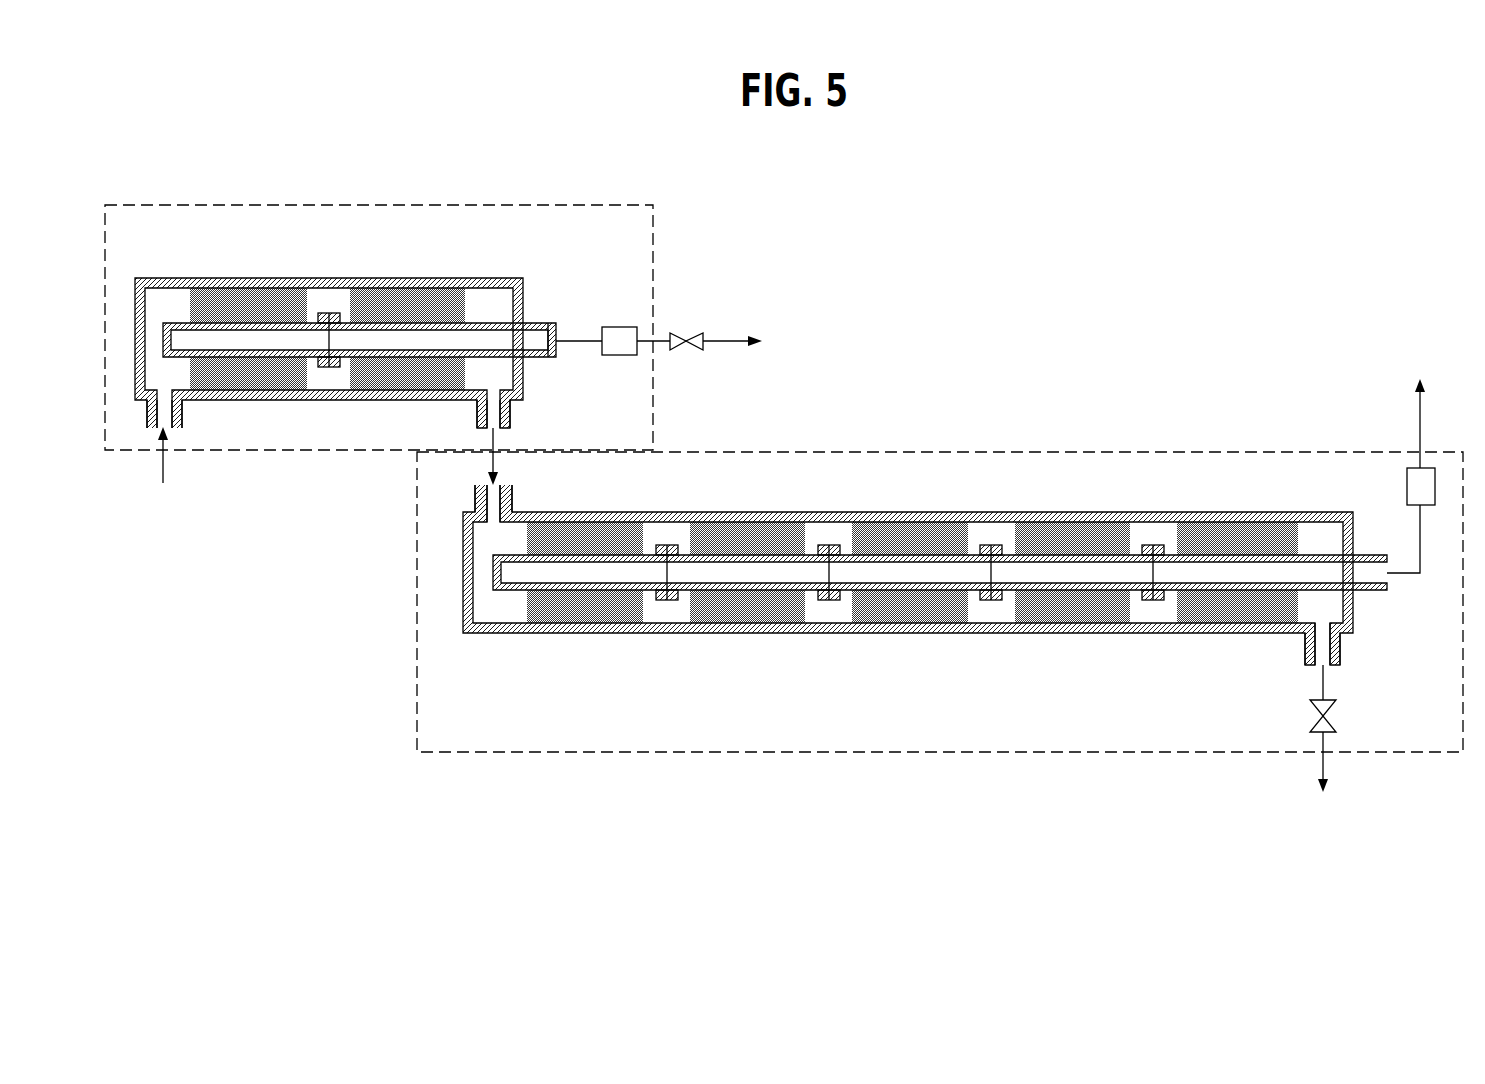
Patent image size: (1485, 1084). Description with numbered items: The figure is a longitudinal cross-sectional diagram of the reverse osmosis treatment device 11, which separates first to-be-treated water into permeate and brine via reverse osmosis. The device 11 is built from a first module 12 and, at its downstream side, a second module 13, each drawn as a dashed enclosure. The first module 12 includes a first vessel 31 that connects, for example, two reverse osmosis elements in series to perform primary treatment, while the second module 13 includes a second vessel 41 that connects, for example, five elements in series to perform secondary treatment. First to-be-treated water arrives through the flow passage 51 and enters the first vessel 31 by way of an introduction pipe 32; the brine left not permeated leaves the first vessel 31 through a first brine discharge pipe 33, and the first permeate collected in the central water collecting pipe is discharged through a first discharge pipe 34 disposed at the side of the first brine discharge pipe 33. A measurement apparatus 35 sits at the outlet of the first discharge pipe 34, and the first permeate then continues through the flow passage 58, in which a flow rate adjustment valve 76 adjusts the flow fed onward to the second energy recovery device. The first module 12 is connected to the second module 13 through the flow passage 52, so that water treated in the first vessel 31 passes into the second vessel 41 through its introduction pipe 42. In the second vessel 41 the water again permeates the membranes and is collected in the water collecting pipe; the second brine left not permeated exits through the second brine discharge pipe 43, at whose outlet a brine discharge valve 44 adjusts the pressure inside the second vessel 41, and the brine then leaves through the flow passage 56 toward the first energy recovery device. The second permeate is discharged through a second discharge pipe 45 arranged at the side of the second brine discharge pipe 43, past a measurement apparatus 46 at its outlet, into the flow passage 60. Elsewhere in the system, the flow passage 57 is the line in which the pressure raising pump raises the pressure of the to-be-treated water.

The reverse osmosis treatment device 11 is at (943, 324).
The first module 12 is at (545, 205).
The second module 13 is at (1205, 452).
The first vessel 31 is at (321, 289).
The introduction pipe 32 is at (183, 418).
The first brine discharge pipe 33 is at (511, 415).
The first discharge pipe 34 is at (537, 324).
The measurement apparatus 35 is at (622, 327).
The second vessel 41 is at (898, 513).
The inlet port 42 is at (477, 497).
The second brine discharge pipe 43 is at (1341, 655).
The brine discharge valve 44 is at (1312, 726).
The second discharge pipe 45 is at (1386, 586).
The measurement apparatus 46 is at (1407, 488).
The flow passage 51 is at (172, 465).
The flow passage 52 is at (497, 468).
The flow passage 56 is at (1330, 770).
The flow passage 57 is at (167, 302).
The flow passage 58 is at (730, 340).
The flow passage 60 is at (1418, 430).
The flow rate adjustment valve 76 is at (683, 333).